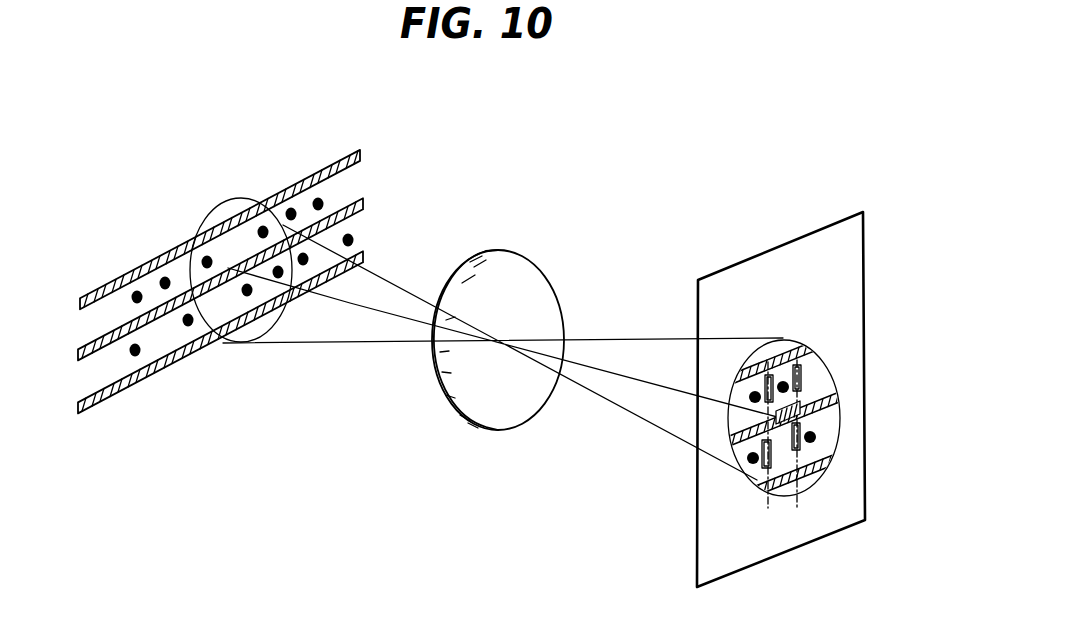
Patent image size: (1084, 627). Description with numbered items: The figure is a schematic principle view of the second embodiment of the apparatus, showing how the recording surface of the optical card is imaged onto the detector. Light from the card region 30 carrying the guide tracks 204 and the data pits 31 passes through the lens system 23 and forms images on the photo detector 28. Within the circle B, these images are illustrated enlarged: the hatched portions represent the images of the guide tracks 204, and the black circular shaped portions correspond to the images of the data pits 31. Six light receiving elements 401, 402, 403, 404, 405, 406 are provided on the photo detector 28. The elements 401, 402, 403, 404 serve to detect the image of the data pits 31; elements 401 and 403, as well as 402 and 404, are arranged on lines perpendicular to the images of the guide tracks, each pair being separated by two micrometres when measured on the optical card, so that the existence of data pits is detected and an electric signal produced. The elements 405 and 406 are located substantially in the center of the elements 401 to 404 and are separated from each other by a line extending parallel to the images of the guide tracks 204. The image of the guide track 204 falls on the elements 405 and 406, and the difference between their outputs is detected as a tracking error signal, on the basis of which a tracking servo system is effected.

The guide tracks 204 is at (366, 252).
The data pits 31 is at (137, 290).
The light spot / illuminated region 30 is at (225, 343).
The lens system 23 is at (525, 262).
The photo detector 28 is at (772, 251).
The light receiving element 403 is at (758, 384).
The light receiving element 404 is at (803, 376).
The light receiving element 405 is at (805, 391).
The light receiving element 406 is at (802, 406).
The circle B is at (812, 442).
The light receiving element 401 is at (757, 470).
The light receiving element 402 is at (808, 452).